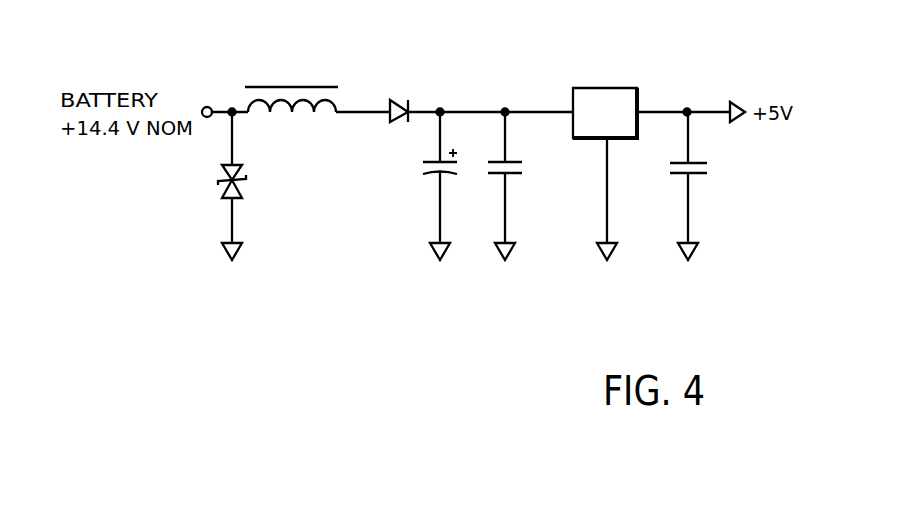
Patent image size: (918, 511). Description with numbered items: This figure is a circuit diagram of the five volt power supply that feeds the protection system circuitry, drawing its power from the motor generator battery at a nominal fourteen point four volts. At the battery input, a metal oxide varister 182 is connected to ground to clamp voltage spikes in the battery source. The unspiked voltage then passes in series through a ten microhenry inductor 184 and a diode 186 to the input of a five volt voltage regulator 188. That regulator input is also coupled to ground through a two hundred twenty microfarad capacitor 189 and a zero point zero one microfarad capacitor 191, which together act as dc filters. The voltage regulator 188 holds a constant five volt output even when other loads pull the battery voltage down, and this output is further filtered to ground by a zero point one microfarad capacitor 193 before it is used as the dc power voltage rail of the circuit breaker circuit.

The metal oxide varister 182 is at (247, 185).
The inductor 184 is at (317, 63).
The diode 186 is at (413, 102).
The voltage regulator 188 is at (603, 88).
The 220 microfarad capacitor 189 is at (447, 177).
The 0.01 microfarad capacitor 191 is at (513, 177).
The 0.1 microfarad capacitor 193 is at (695, 178).